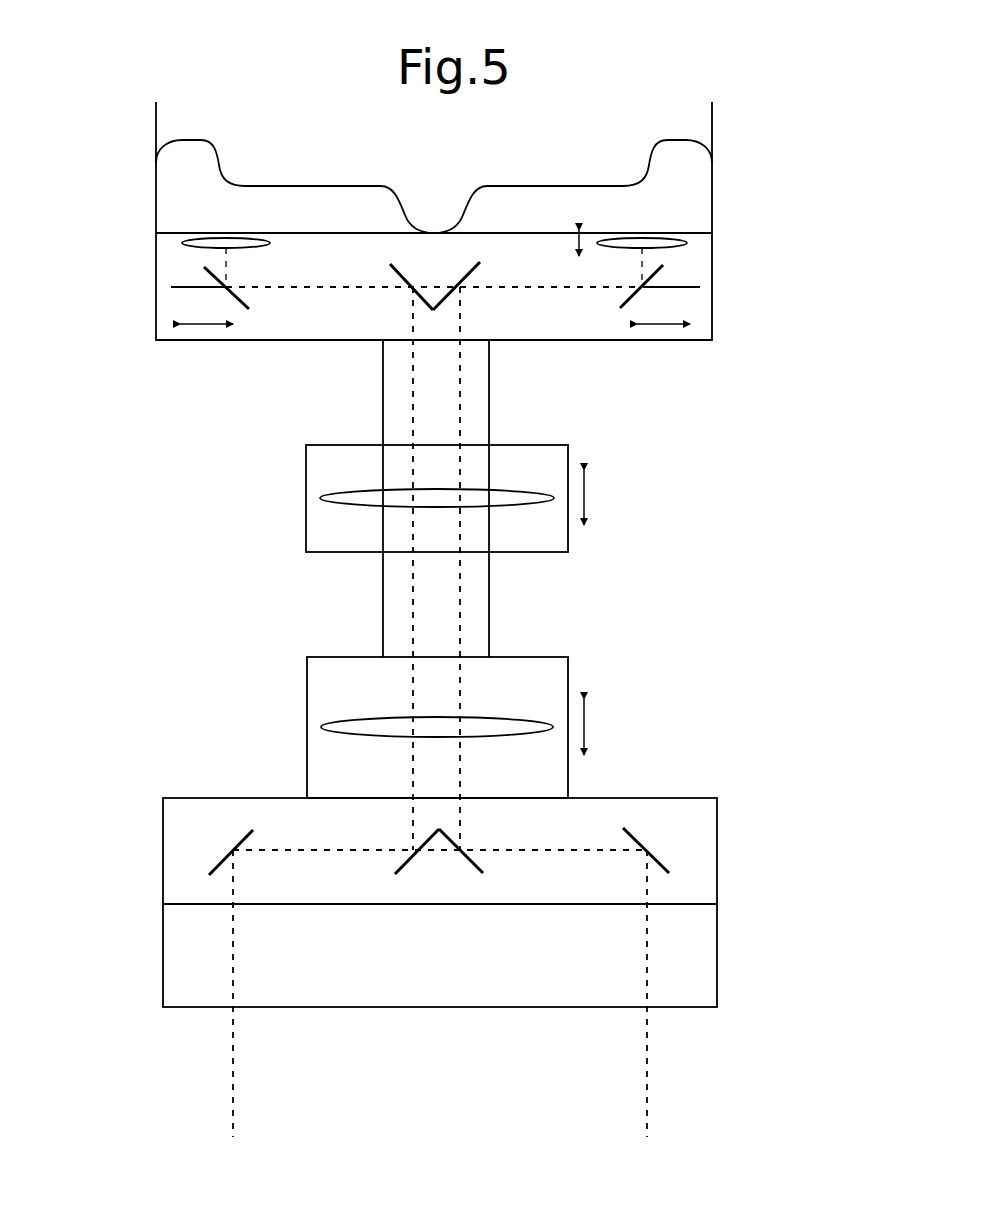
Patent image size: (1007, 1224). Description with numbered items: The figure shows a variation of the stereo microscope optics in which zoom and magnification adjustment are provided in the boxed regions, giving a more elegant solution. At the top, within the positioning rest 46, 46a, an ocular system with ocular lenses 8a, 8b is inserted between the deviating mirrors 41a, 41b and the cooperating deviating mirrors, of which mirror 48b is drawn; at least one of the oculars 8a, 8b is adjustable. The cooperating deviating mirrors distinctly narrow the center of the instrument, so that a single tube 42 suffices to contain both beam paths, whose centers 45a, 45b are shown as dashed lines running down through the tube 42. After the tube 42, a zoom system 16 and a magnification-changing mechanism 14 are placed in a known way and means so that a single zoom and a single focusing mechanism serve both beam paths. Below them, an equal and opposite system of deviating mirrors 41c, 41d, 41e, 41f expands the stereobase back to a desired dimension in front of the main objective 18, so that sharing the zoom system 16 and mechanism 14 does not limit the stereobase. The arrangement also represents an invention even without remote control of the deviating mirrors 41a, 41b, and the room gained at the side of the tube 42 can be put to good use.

The positioning rest 46 is at (182, 138).
The positioning rest 46a is at (390, 264).
The cooperating deviating mirror 48b is at (480, 262).
The ocular lens 8a is at (205, 233).
The ocular lens 8b is at (672, 228).
The deviating mirror 41a is at (205, 267).
The deviating mirror 41b is at (663, 266).
The deviating mirror 41c is at (212, 862).
The deviating mirror 41d is at (667, 860).
The deviating mirror 41e is at (398, 866).
The deviating mirror 41f is at (485, 871).
The center of the beam path 45a is at (413, 370).
The center of the beam path 45b is at (460, 370).
The tube 42 is at (489, 403).
The zoom system 16 is at (313, 472).
The magnification-changing mechanism 14 is at (313, 693).
The main objective 18 is at (700, 953).